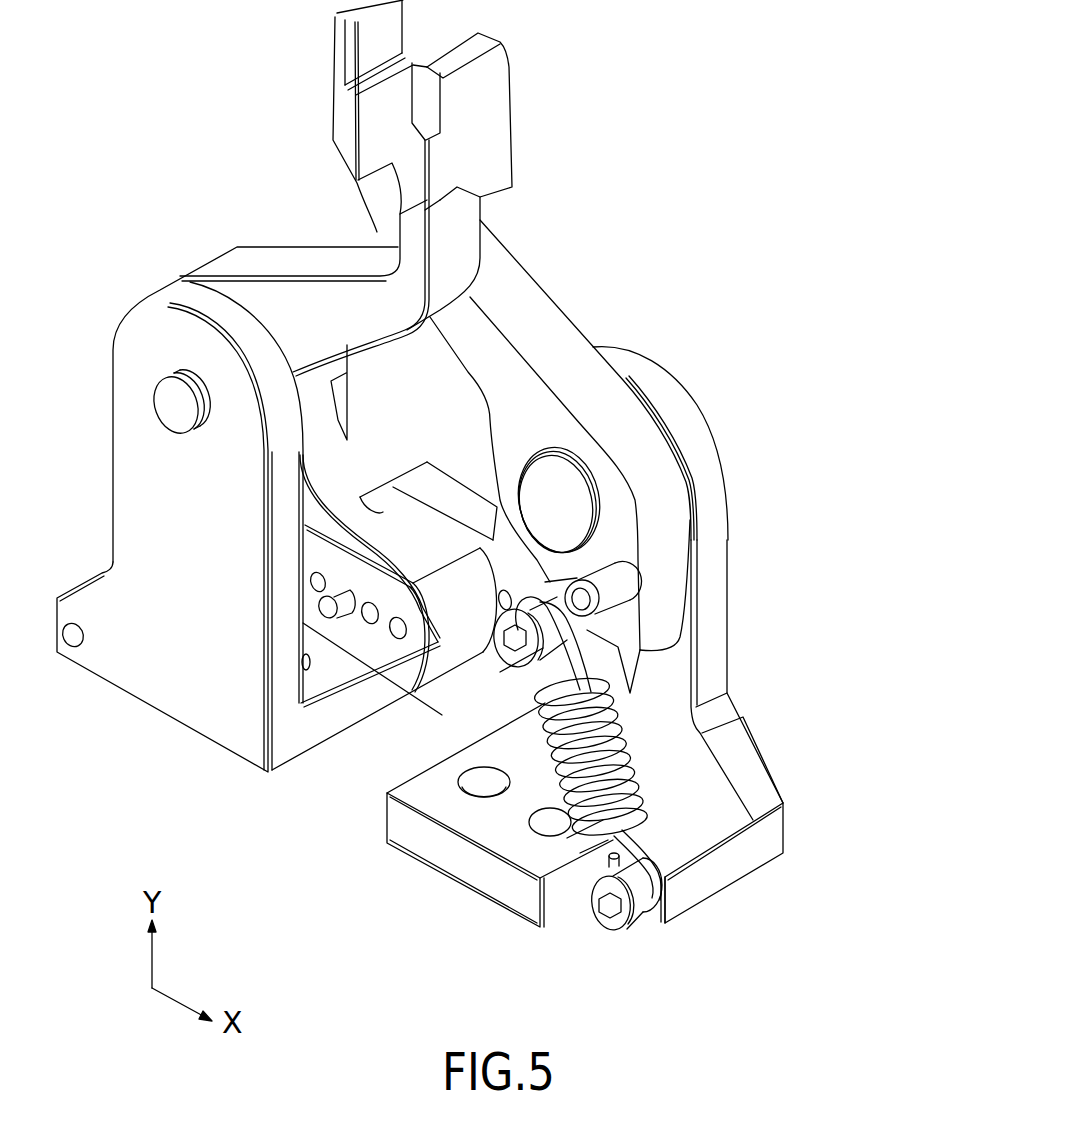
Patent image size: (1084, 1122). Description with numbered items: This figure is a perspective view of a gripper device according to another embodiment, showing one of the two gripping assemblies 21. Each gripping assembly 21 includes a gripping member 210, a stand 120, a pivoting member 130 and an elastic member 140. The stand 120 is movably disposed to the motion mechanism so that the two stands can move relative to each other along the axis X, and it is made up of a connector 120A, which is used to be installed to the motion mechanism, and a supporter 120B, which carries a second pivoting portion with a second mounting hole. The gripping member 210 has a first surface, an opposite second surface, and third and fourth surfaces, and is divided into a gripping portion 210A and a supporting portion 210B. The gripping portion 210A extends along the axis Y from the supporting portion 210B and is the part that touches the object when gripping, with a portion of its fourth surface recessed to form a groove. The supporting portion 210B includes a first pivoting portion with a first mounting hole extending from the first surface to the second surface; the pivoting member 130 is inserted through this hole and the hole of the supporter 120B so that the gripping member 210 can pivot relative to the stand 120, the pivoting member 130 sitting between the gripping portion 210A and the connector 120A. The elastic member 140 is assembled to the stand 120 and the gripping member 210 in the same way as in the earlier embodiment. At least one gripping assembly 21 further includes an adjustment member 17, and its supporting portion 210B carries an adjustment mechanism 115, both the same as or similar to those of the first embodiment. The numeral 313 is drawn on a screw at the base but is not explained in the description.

The gripping assembly 21 is at (145, 210).
The stand 120 is at (500, 533).
The connector 120A is at (631, 815).
The supporter 120B is at (712, 646).
The pivoting member 130 is at (168, 410).
The adjustment mechanism 115 is at (360, 625).
The adjustment member 17 is at (326, 615).
The gripping member 210 is at (538, 346).
The gripping portion 210A is at (499, 285).
The supporting portion 210B is at (609, 506).
The elastic member 140 is at (587, 822).
The screw 313 is at (610, 893).